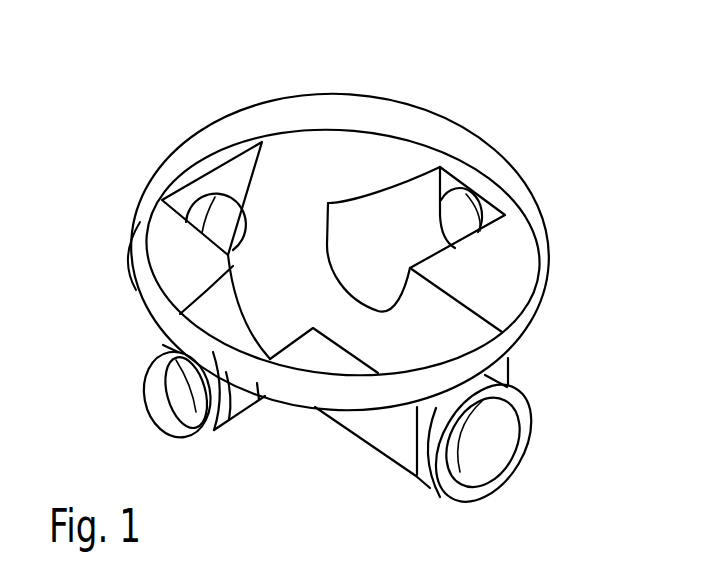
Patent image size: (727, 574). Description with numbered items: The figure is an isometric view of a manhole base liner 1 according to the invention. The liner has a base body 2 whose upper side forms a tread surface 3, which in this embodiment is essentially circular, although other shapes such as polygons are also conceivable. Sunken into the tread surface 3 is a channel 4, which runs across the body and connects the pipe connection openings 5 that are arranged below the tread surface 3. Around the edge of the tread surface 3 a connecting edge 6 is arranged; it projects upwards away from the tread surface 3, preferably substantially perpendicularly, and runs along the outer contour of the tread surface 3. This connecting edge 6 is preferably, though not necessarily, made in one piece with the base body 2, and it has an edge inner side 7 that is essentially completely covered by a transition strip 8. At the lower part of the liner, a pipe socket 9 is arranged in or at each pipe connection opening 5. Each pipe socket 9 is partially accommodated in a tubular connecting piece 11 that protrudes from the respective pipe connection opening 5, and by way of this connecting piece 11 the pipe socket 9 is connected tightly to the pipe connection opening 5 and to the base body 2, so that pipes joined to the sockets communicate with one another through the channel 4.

The manhole base liner 1 is at (153, 107).
The base body 2 is at (370, 425).
The tread surface 3 is at (497, 267).
The channel 4 is at (289, 282).
The pipe connection opening 5 is at (463, 217).
The connecting edge 6 is at (165, 315).
The edge inner side 7 is at (420, 128).
The transition strip 8 is at (420, 128).
The pipe socket 9 is at (462, 483).
The tubular connecting piece 11 is at (423, 443).